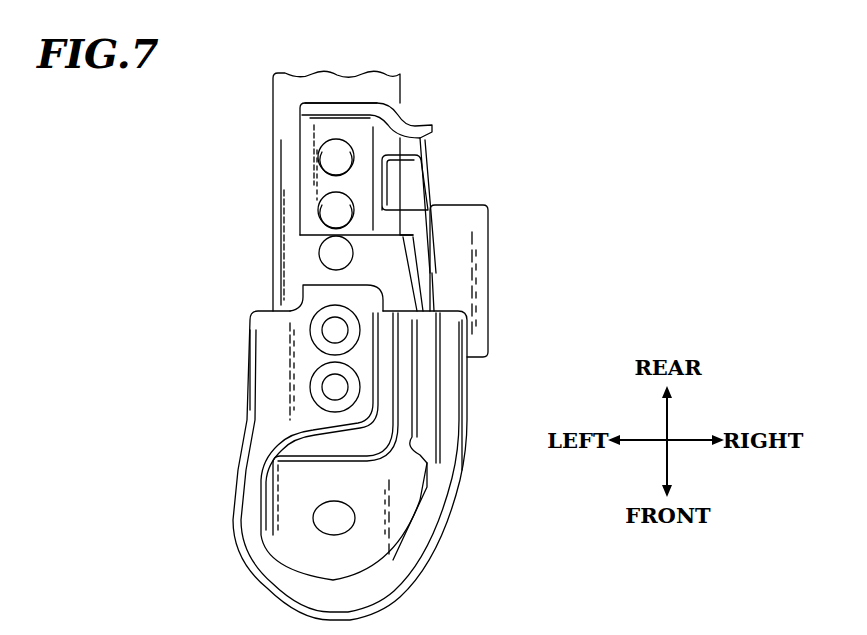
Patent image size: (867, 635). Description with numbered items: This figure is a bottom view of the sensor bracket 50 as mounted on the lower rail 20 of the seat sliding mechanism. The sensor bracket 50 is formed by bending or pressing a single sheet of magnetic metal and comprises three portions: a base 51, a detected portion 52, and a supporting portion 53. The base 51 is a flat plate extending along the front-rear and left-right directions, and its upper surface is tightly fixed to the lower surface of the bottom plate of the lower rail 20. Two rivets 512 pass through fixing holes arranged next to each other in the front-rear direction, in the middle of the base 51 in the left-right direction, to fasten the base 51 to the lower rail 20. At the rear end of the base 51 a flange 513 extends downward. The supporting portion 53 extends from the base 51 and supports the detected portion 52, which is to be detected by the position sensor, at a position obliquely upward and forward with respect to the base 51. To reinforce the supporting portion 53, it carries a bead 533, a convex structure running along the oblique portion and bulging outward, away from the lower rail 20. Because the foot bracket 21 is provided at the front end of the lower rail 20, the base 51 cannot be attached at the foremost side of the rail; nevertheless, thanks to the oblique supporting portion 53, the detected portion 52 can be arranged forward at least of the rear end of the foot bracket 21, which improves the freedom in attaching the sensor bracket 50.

The lower rail 20 is at (273, 272).
The foot bracket 21 is at (247, 552).
The sensor bracket 50 is at (453, 105).
The base 51 is at (307, 138).
The rivets 512 is at (333, 163).
The flange 513 is at (327, 108).
The detected portion 52 is at (480, 252).
The supporting portion 53 is at (410, 150).
The bead 533 is at (418, 197).